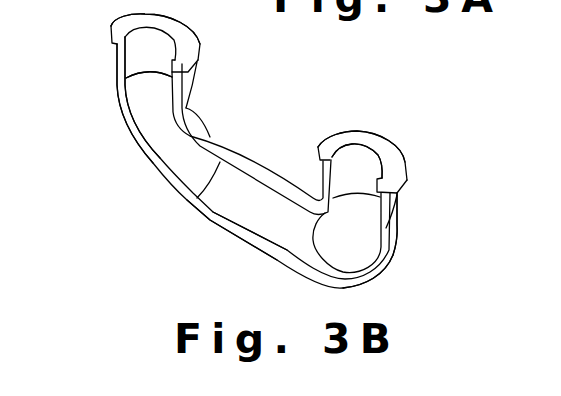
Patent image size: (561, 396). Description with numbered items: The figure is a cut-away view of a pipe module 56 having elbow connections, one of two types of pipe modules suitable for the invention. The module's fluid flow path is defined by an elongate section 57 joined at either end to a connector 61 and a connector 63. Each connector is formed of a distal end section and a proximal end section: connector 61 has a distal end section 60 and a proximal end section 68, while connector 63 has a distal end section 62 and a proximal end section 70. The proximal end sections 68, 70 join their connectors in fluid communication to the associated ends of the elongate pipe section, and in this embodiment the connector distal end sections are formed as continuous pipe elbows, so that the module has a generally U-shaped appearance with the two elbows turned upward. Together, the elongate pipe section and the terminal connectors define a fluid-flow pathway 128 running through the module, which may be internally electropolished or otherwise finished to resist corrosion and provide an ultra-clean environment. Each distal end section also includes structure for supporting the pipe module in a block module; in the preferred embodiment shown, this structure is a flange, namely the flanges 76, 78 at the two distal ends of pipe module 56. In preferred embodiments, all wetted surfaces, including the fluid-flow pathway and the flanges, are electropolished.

The pipe module 56 is at (249, 153).
The elongate section 57 is at (210, 218).
The distal end section 60 is at (139, 52).
The connector 61 is at (118, 90).
The distal end section 62 is at (358, 168).
The connector 63 is at (403, 224).
The proximal end section 68 is at (137, 144).
The proximal end section 70 is at (384, 264).
The flange 76 is at (200, 45).
The flange 78 is at (408, 165).
The fluid-flow pathway 128 is at (257, 213).